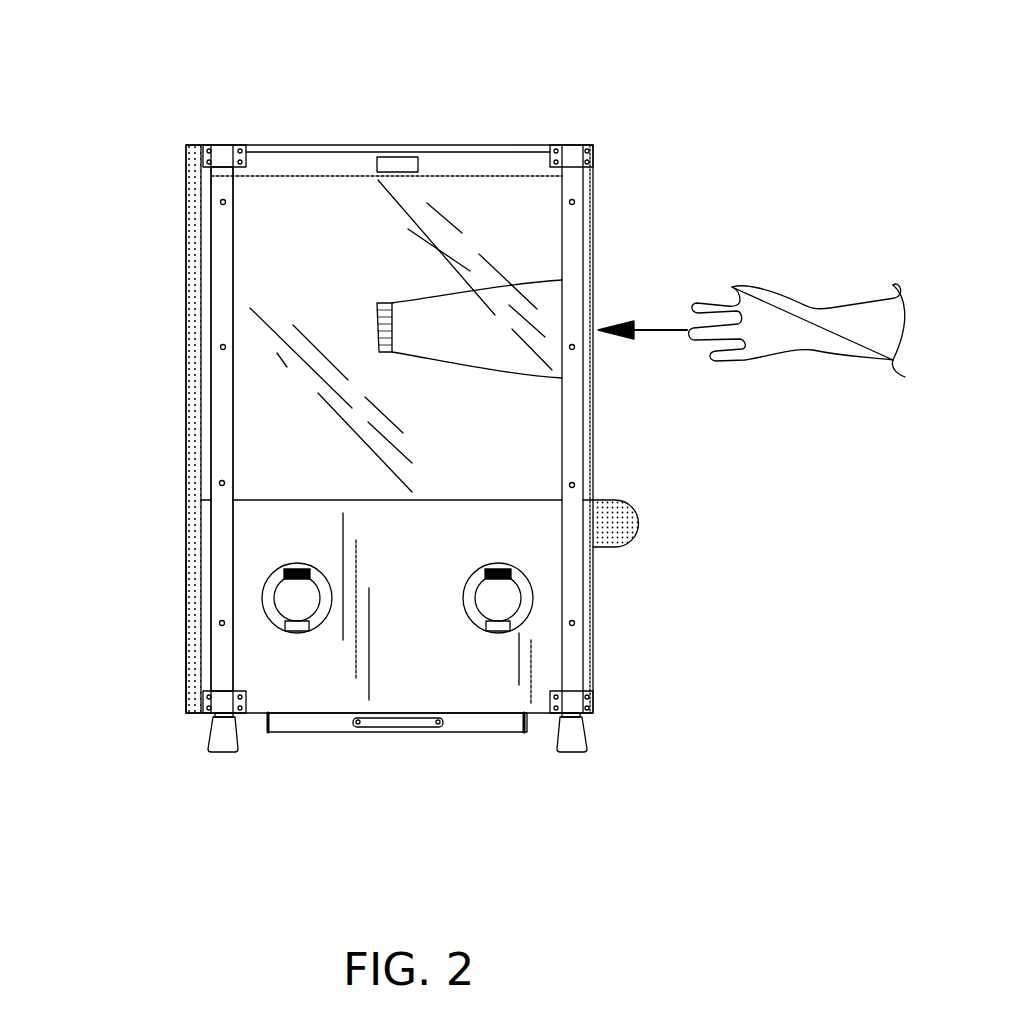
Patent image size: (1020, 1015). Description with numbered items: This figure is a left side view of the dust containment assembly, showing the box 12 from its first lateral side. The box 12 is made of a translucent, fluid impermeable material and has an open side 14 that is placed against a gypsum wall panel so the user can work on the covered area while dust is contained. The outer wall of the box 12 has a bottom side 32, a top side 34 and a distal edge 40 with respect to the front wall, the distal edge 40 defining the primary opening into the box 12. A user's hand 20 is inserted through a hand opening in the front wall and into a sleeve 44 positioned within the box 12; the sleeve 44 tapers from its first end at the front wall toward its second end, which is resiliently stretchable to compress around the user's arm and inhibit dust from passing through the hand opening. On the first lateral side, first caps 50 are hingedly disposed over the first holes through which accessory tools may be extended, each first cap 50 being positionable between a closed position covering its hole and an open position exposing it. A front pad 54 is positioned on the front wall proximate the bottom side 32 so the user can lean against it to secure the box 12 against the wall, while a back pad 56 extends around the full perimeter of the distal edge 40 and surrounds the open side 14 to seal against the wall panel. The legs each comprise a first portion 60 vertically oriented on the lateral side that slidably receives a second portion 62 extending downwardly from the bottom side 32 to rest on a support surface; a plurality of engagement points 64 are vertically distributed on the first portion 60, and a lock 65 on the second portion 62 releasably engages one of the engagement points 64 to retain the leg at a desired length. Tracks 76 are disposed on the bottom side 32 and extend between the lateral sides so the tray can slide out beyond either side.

The box 12 is at (450, 198).
The open side 14 is at (158, 228).
The user's hand 20 is at (722, 308).
The bottom side 32 is at (473, 715).
The top side 34 is at (407, 145).
The distal edge 40 is at (200, 308).
The sleeve 44 is at (497, 280).
The first cap 50 is at (486, 597).
The front pad 54 is at (630, 520).
The back pad 56 is at (185, 652).
The first portion 60 is at (220, 537).
The second portion 62 is at (222, 738).
The engagement point 64 is at (240, 328).
The lock 65 is at (220, 202).
The track 76 is at (265, 732).